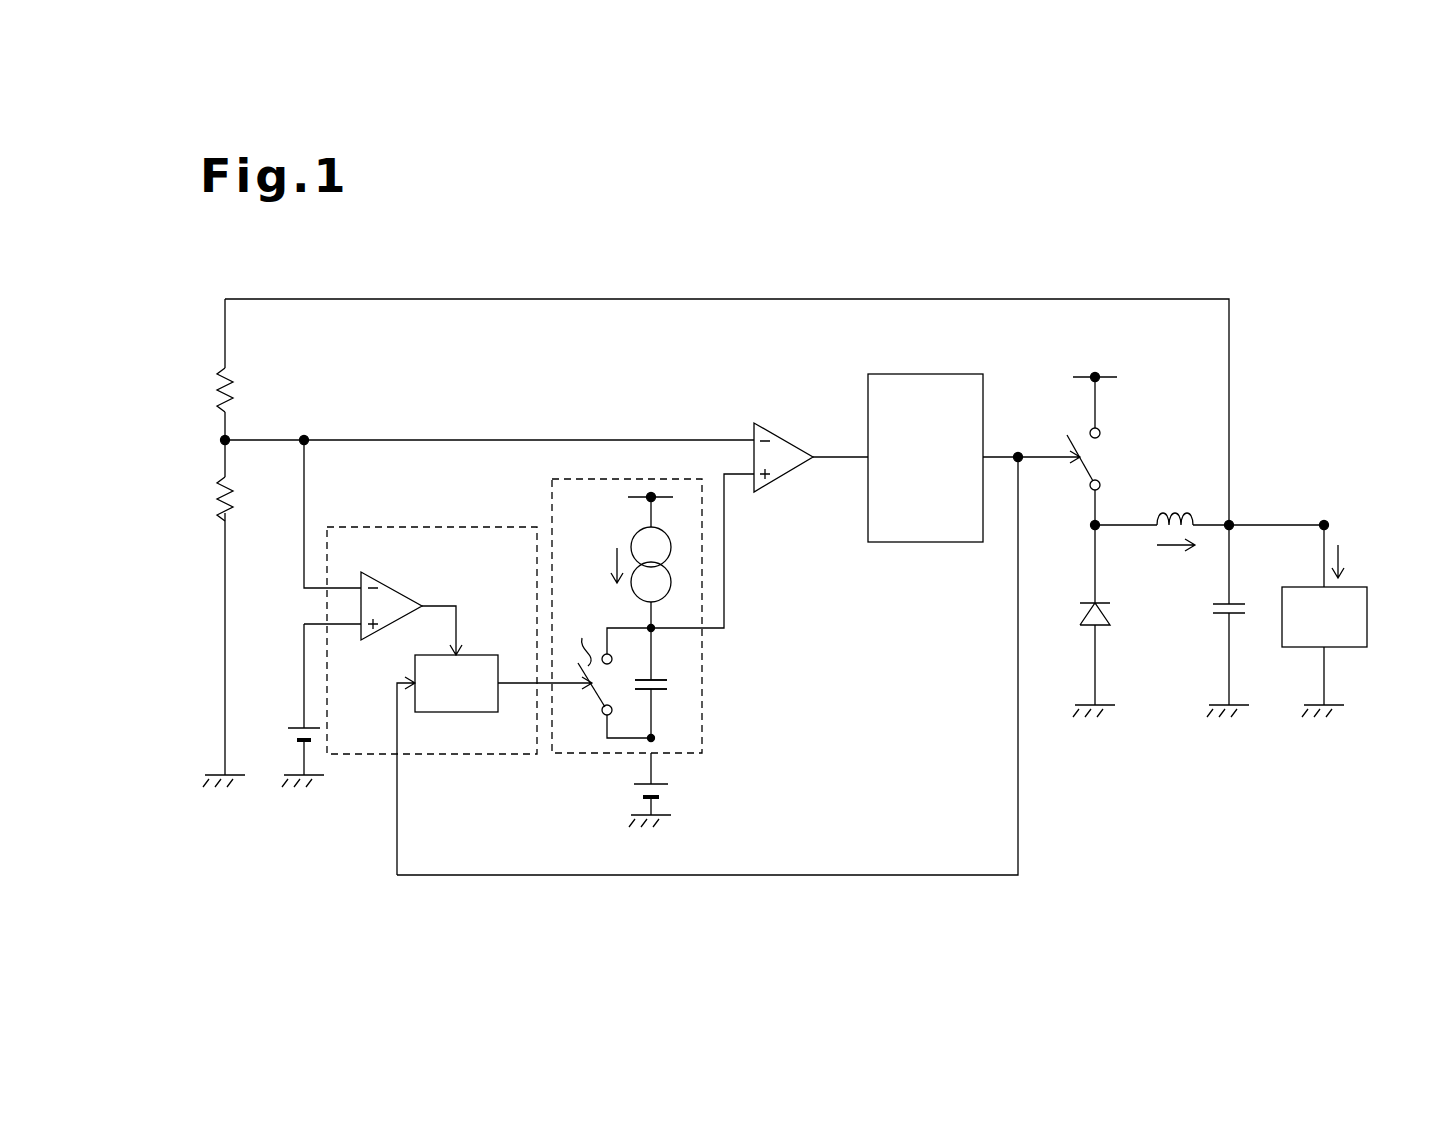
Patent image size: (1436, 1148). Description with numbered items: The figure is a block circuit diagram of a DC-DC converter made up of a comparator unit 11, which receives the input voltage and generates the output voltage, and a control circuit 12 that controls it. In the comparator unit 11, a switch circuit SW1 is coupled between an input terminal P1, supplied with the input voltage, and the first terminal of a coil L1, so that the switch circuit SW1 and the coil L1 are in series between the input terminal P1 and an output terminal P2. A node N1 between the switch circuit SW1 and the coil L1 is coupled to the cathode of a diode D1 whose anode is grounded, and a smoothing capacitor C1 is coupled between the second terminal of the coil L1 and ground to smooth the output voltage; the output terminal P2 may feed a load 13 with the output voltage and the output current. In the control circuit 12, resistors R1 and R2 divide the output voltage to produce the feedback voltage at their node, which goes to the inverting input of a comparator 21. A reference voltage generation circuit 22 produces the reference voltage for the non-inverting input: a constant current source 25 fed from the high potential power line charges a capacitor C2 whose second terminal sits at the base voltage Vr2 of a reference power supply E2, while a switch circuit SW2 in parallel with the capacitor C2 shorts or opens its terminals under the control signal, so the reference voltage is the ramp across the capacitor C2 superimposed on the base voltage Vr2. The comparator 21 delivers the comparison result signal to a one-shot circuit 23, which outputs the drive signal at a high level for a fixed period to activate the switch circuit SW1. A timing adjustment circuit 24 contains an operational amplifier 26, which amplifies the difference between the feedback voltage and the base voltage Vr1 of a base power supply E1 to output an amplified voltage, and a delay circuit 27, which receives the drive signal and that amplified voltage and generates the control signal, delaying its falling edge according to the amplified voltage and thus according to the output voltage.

The comparator unit 11 is at (1033, 350).
The control circuit 12 is at (946, 354).
The load 13 is at (1367, 617).
The comparator 21 is at (790, 440).
The reference voltage generation circuit 22 is at (702, 690).
The one-shot circuit 23 is at (893, 374).
The timing adjustment circuit 24 is at (431, 527).
The constant current source 25 is at (633, 539).
The operational amplifier 26 is at (397, 590).
The delay circuit 27 is at (476, 655).
The resistor R1 is at (231, 395).
The resistor R2 is at (231, 494).
The smoothing capacitor C1 is at (1219, 613).
The capacitor C2 is at (658, 678).
The coil L1 is at (1172, 512).
The diode D1 is at (1110, 614).
The switch circuit SW1 is at (1096, 457).
The switch circuit SW2 is at (574, 673).
The input terminal P1 is at (1093, 372).
The output terminal P2 is at (1324, 520).
The node N1 is at (1089, 525).
The base power supply E1 is at (297, 742).
The reference power supply E2 is at (655, 798).
The base voltage Vr1 is at (278, 682).
The base voltage Vr2 is at (668, 784).